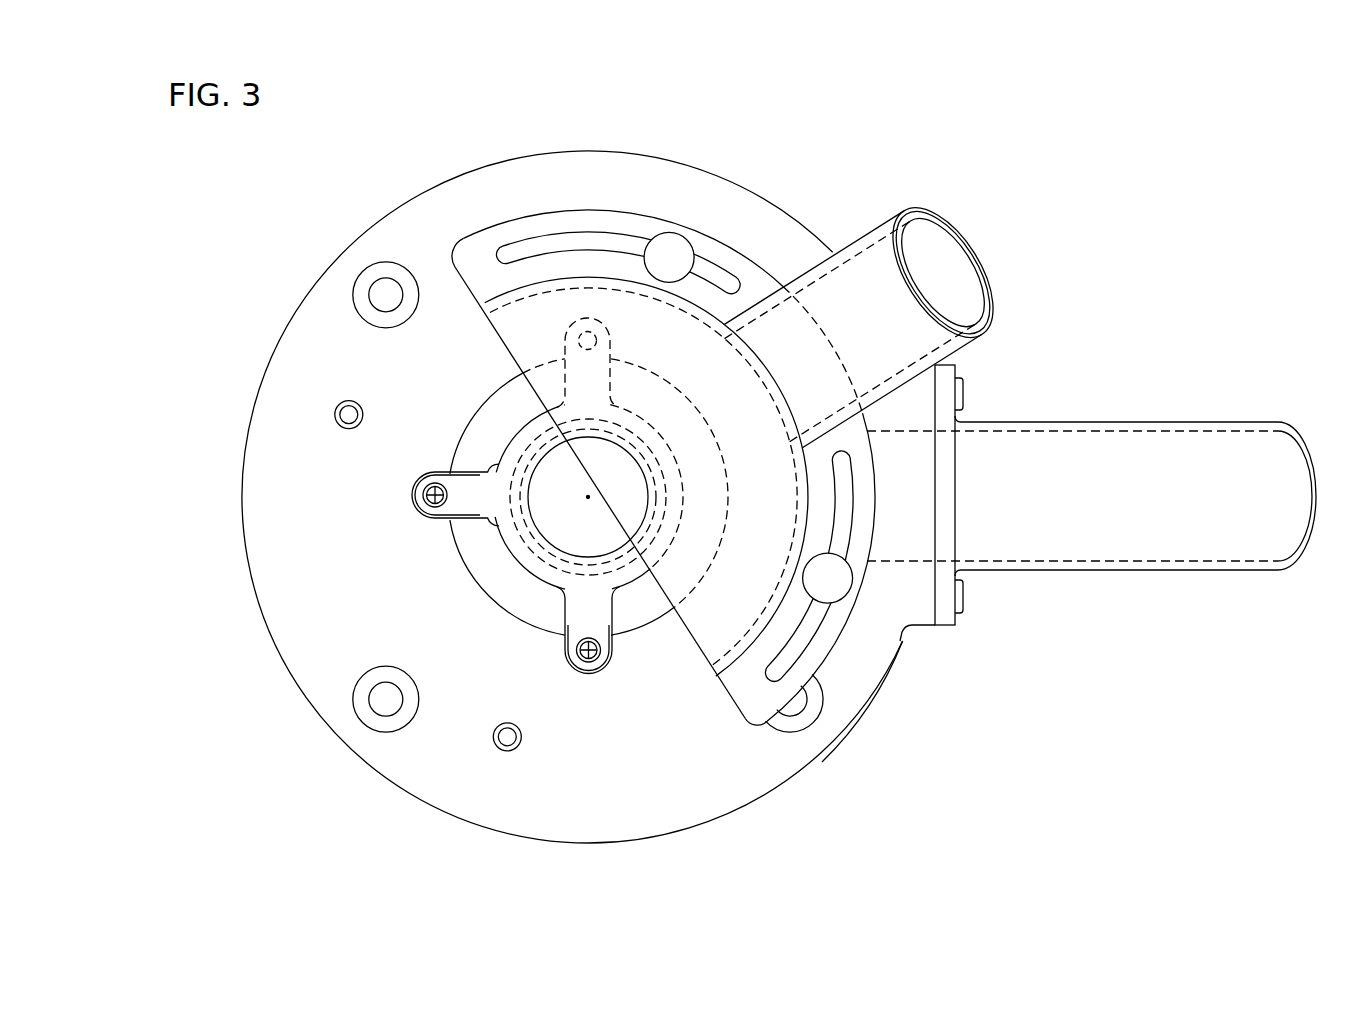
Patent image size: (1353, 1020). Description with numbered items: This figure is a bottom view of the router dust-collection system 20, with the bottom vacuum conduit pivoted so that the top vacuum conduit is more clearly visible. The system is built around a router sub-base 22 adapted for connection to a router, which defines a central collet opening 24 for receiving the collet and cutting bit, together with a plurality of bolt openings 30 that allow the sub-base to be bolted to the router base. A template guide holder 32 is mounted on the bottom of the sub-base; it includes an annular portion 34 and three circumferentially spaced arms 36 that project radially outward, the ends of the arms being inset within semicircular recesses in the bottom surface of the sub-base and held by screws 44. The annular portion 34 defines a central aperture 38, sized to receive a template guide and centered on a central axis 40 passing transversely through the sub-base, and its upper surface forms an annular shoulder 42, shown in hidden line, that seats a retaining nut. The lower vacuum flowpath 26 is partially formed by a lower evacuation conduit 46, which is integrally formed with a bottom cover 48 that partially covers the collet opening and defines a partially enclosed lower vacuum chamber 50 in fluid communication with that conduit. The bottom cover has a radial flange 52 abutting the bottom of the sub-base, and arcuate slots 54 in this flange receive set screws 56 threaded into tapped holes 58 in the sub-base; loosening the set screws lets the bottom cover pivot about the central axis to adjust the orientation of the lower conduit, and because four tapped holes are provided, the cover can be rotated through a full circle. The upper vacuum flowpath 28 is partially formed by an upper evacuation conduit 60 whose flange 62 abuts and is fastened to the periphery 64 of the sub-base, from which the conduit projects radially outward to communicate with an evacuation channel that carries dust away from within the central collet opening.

The router dust-collection system 20 is at (732, 519).
The router sub-base 22 is at (721, 821).
The central collet opening 24 is at (462, 563).
The lower vacuum flowpath 26 is at (857, 242).
The upper vacuum flowpath 28 is at (1133, 421).
The bolt openings 30 is at (372, 287).
The template guide holder 32 is at (563, 603).
The annular portion 34 is at (627, 570).
The arms 36 is at (613, 630).
The central aperture 38 is at (537, 473).
The central axis 40 is at (588, 495).
The annular shoulder 42 is at (550, 447).
The screws 44 is at (425, 501).
The lower evacuation conduit 46 is at (910, 205).
The bottom cover 48 is at (732, 665).
The lower vacuum chamber 50 is at (513, 320).
The radial flange 52 is at (522, 218).
The arcuate slots 54 is at (598, 240).
The set screws 56 is at (681, 236).
The tapped holes 58 is at (334, 413).
The upper evacuation conduit 60 is at (1237, 422).
The flange 62 is at (942, 375).
The periphery 64 is at (840, 740).